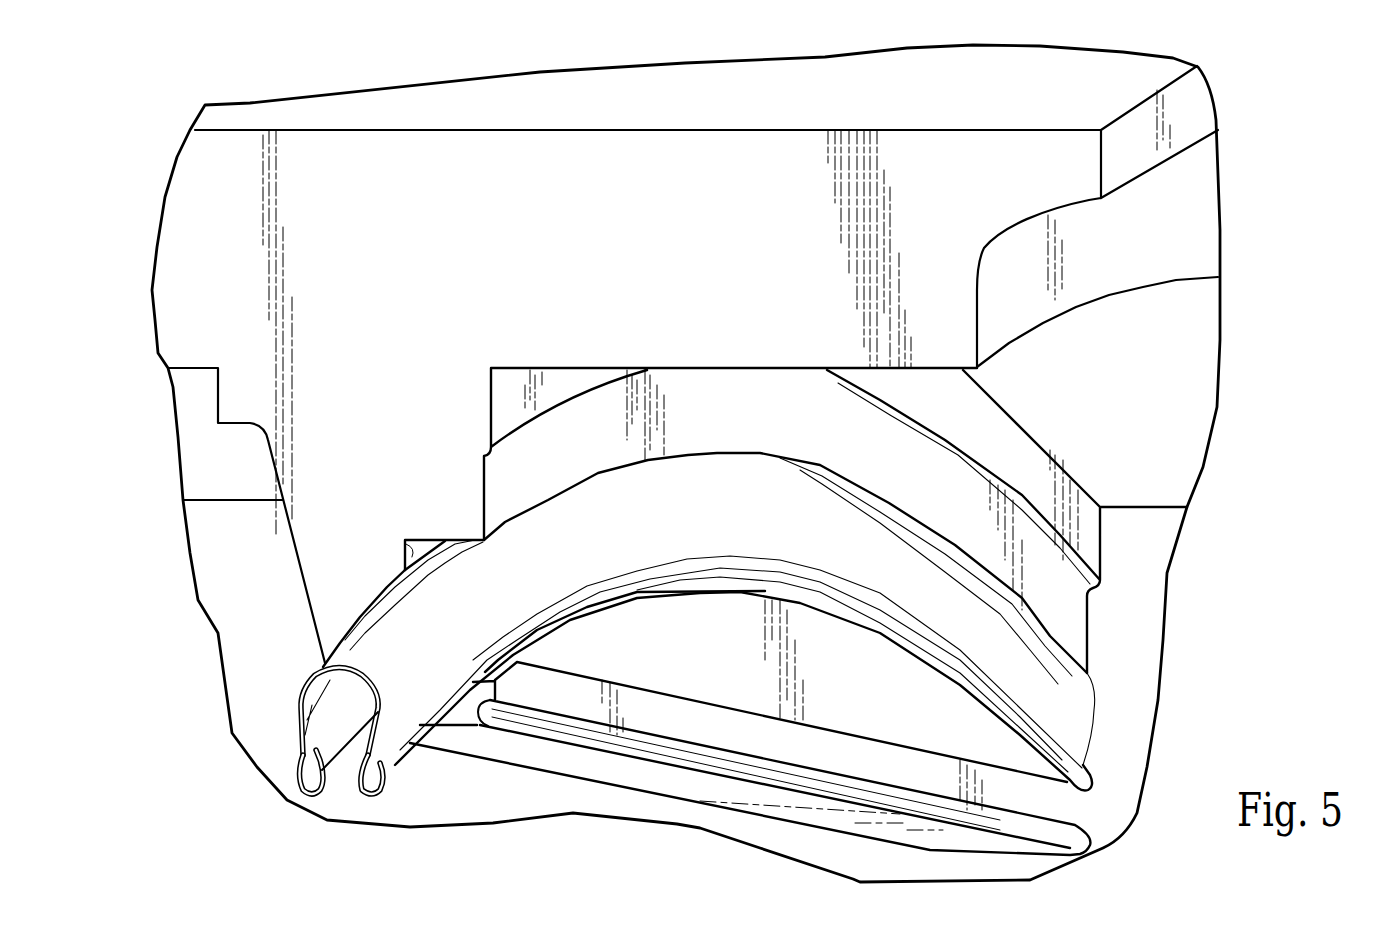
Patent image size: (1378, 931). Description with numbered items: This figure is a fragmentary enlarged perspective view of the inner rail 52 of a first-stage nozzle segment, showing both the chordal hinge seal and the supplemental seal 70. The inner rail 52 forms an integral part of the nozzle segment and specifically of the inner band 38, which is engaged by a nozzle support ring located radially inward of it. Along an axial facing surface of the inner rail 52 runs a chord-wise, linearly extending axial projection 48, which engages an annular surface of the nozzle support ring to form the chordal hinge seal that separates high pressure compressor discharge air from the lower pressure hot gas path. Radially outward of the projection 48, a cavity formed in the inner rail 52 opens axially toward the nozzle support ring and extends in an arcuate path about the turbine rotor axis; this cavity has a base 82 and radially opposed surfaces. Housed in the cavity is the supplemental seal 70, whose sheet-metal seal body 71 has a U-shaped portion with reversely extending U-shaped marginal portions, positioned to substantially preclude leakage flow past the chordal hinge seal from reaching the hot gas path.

The inner band 38 is at (414, 147).
The inner rail 52 is at (371, 477).
The base 82 is at (405, 557).
The supplemental seal 70 is at (805, 626).
The seal body 71 is at (298, 707).
The axial projection 48 is at (688, 727).